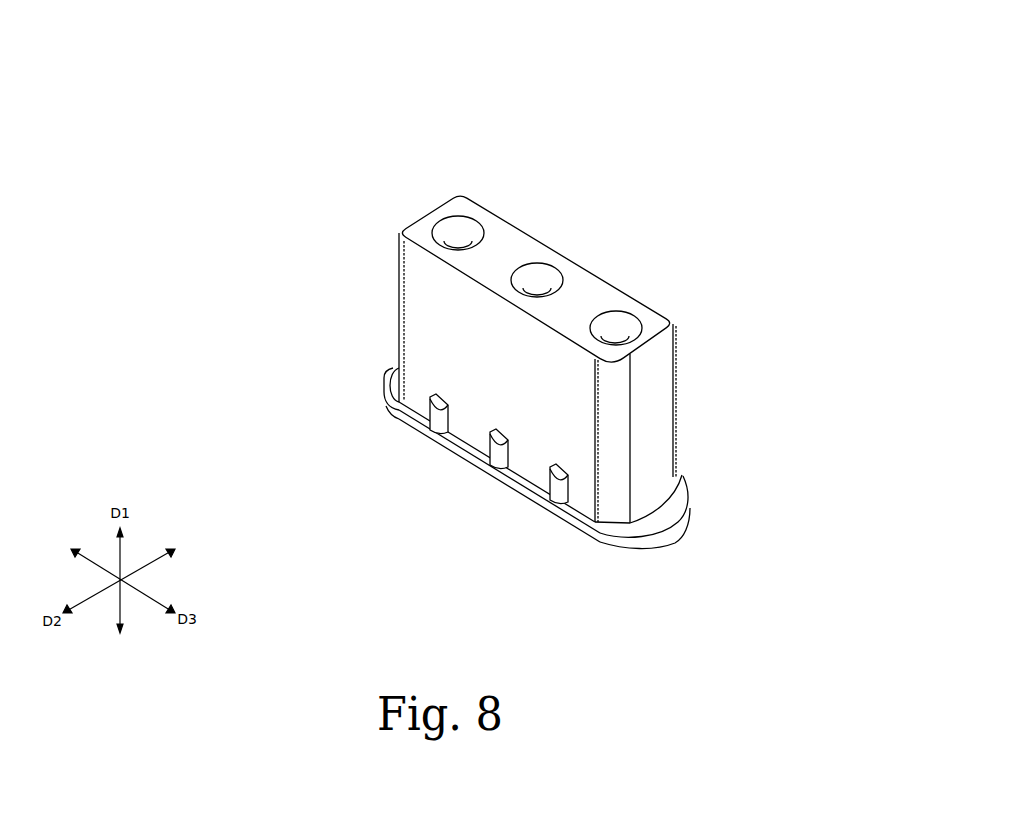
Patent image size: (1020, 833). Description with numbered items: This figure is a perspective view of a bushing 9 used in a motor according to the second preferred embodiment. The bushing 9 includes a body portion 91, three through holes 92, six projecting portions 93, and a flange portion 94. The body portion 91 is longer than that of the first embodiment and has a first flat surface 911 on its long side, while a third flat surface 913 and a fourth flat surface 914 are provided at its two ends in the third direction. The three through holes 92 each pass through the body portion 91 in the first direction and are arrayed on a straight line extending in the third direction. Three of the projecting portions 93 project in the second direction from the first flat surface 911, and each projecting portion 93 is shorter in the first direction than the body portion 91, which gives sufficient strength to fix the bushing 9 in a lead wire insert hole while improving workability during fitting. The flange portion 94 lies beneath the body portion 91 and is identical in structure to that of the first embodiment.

The bushing 9 is at (627, 135).
The body portion 91 is at (668, 363).
The first flat surface 911 is at (386, 371).
The third flat surface 913 is at (406, 222).
The fourth flat surface 914 is at (653, 423).
The through holes 92 is at (463, 224).
The projecting portions 93 is at (438, 436).
The flange portion 94 is at (648, 543).